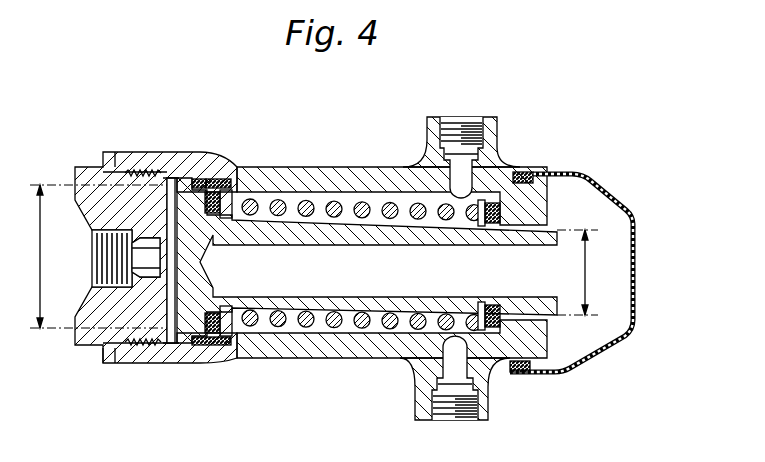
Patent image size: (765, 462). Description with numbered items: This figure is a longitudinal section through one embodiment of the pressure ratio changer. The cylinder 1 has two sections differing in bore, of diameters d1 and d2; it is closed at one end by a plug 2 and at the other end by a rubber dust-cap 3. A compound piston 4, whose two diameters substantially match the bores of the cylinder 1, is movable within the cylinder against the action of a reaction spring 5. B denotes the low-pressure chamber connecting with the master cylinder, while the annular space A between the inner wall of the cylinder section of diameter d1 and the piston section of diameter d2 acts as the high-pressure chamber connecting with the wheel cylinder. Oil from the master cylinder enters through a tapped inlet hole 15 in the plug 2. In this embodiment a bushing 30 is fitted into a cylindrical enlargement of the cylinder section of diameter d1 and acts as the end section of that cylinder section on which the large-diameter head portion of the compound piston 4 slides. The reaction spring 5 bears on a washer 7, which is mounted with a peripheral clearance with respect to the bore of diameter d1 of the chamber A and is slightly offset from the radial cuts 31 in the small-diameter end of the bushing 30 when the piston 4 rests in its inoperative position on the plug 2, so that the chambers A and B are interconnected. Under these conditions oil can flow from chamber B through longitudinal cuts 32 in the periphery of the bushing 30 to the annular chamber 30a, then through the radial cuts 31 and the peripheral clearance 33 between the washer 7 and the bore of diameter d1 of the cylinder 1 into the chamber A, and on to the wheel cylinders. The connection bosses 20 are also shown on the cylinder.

The cylinder 1 is at (322, 181).
The plug 2 is at (84, 344).
The rubber dust-cap 3 is at (608, 194).
The compound piston 4 is at (277, 300).
The reaction spring 5 is at (365, 208).
The washer 7 is at (229, 206).
The tapped inlet hole 15 is at (96, 272).
The connection boss 20 is at (455, 127).
The bushing 30 is at (186, 338).
The annular chamber 30a is at (218, 180).
The radial cuts 31 is at (220, 344).
The longitudinal cuts 32 is at (197, 179).
The peripheral clearance 33 is at (233, 193).
The high-pressure chamber A is at (362, 329).
The low-pressure chamber B is at (157, 346).
The large bore diameter d1 is at (100, 256).
The small bore diameter d2 is at (584, 272).